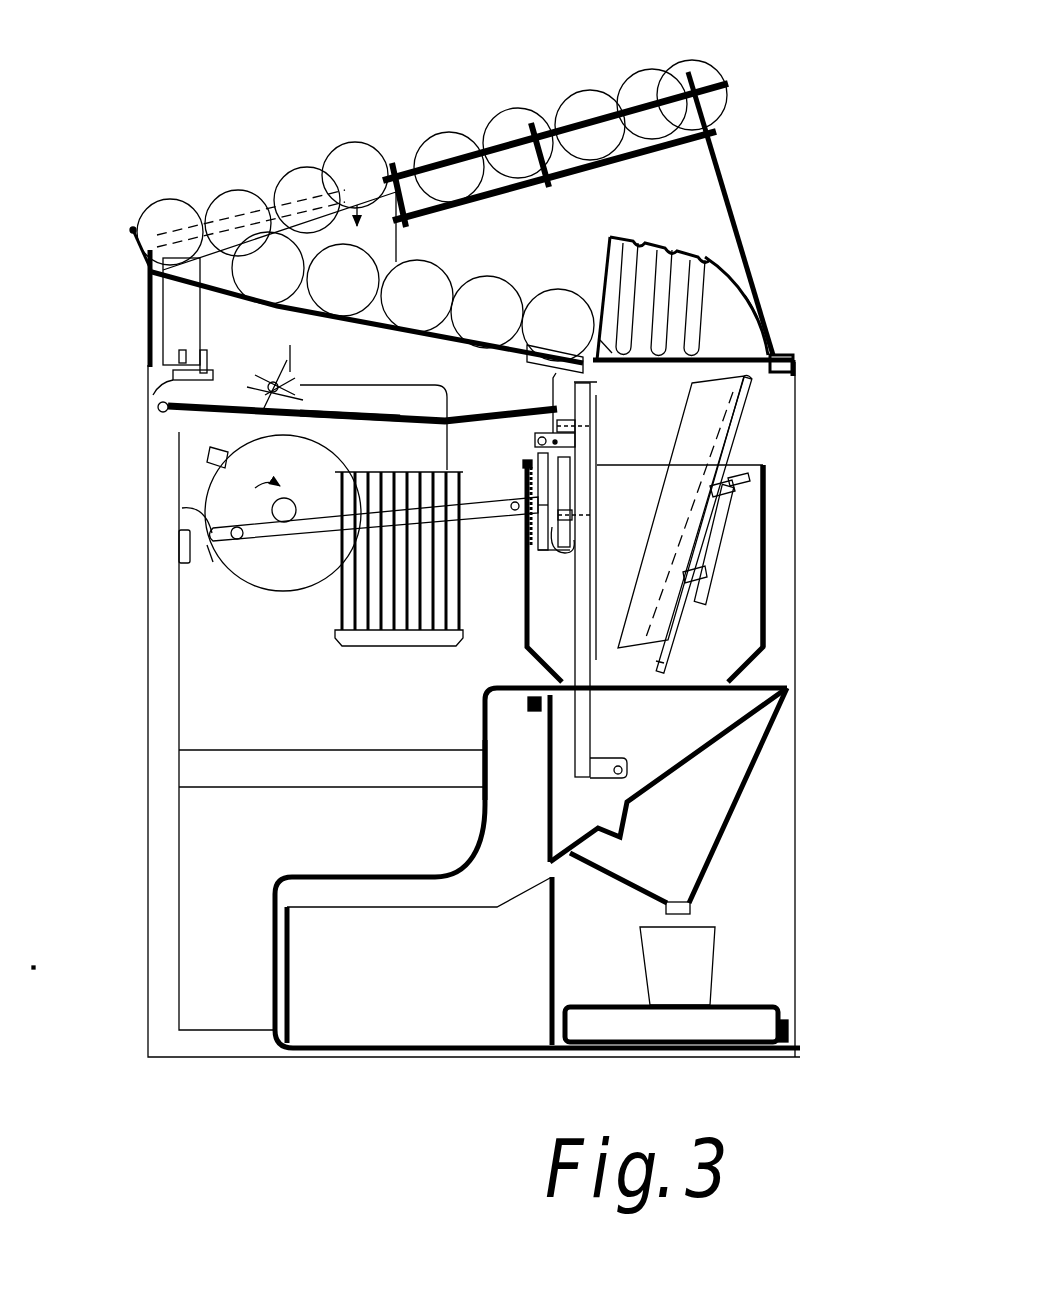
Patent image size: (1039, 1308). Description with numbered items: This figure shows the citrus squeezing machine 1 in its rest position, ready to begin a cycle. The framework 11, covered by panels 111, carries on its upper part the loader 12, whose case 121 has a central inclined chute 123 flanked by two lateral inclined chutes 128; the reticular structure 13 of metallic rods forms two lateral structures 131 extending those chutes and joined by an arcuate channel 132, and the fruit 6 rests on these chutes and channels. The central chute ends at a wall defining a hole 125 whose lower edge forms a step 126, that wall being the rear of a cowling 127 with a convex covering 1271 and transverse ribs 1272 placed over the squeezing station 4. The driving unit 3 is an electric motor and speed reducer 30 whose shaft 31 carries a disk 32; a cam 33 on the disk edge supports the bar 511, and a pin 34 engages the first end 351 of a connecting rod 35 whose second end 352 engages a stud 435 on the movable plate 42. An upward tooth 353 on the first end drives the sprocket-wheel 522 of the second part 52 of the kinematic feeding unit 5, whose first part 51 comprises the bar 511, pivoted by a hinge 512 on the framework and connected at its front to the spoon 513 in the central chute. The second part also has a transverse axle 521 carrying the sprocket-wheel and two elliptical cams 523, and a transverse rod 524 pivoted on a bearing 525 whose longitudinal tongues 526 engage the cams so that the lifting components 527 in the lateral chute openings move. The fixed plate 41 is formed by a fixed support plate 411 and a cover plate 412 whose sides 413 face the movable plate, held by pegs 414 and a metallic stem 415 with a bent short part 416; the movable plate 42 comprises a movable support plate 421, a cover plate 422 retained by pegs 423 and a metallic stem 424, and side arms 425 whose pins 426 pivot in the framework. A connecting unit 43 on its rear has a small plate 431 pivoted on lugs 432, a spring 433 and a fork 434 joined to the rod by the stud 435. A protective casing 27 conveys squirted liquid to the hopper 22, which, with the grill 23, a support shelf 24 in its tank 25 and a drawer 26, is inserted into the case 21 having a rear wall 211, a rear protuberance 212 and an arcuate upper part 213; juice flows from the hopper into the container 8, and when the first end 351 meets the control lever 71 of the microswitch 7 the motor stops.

The machine 1 is at (121, 145).
The framework 11 is at (436, 695).
The panel 111 is at (358, 763).
The loader 12 is at (451, 218).
The case 121 is at (150, 285).
The central inclined chute 123 is at (440, 328).
The hole 125 is at (687, 289).
The step 126 is at (613, 345).
The cowling 127 is at (740, 268).
The covering 1271 is at (760, 290).
The transverse ribs 1272 is at (707, 252).
The lateral inclined chutes 128 is at (356, 166).
The reticular structure 13 is at (589, 191).
The lateral structures 131 is at (478, 133).
The arcuate channel 132 is at (692, 72).
The fruit 6 is at (238, 195).
The kinematic feeding unit 5 is at (325, 389).
The first part of the kinematic feeding unit 51 is at (357, 392).
The bar 511 is at (397, 400).
The hinge 512 is at (160, 412).
The spoon 513 is at (527, 363).
The second part of the kinematic feeding unit 52 is at (216, 334).
The transverse axle 521 is at (293, 383).
The sprocket-wheel 522 is at (289, 362).
The elliptical cams 523 is at (258, 392).
The transverse rod 524 is at (178, 357).
The bearing 525 is at (153, 392).
The longitudinal tongues 526 is at (240, 352).
The lifting components 527 is at (178, 317).
The driving unit 3 is at (358, 567).
The electric motor and speed reducer 30 is at (415, 395).
The shaft 31 is at (297, 497).
The disk 32 is at (300, 433).
The cam 33 is at (217, 452).
The pin 34 is at (243, 540).
The connecting rod 35 is at (350, 518).
The first end of the connecting rod 351 is at (210, 563).
The second end of the connecting rod 352 is at (455, 475).
The tooth 353 is at (249, 515).
The microswitch 7 is at (179, 545).
The control lever 71 is at (180, 508).
The squeezing station 4 is at (736, 494).
The fixed plate 41 is at (728, 381).
The fixed support plate 411 is at (738, 412).
The cover plate 412 is at (718, 440).
The sides 413 is at (655, 657).
The pegs 414 is at (742, 495).
The metallic stem 415 is at (713, 557).
The short orthogonal part 416 is at (752, 470).
The movable plate 42 is at (610, 596).
The movable support plate 421 is at (580, 603).
The cover plate 422 is at (591, 447).
The pegs 423 is at (577, 422).
The metallic stem 424 is at (538, 455).
The side arms 425 is at (583, 723).
The pins 426 is at (616, 777).
The connecting unit 43 is at (551, 488).
The small plate 431 is at (538, 553).
The lugs 432 is at (550, 407).
The spring 433 is at (588, 557).
The fork 434 is at (523, 513).
The stud 435 is at (531, 488).
The protective casing 27 is at (770, 607).
The case 21 is at (537, 868).
The rear wall 211 is at (483, 770).
The rear protuberance 212 is at (331, 870).
The arcuate upper part 213 is at (466, 848).
The hopper 22 is at (733, 834).
The grill 23 is at (718, 724).
The support shelf 24 is at (738, 1002).
The tank 25 is at (792, 1032).
The drawer 26 is at (483, 898).
The container 8 is at (720, 951).